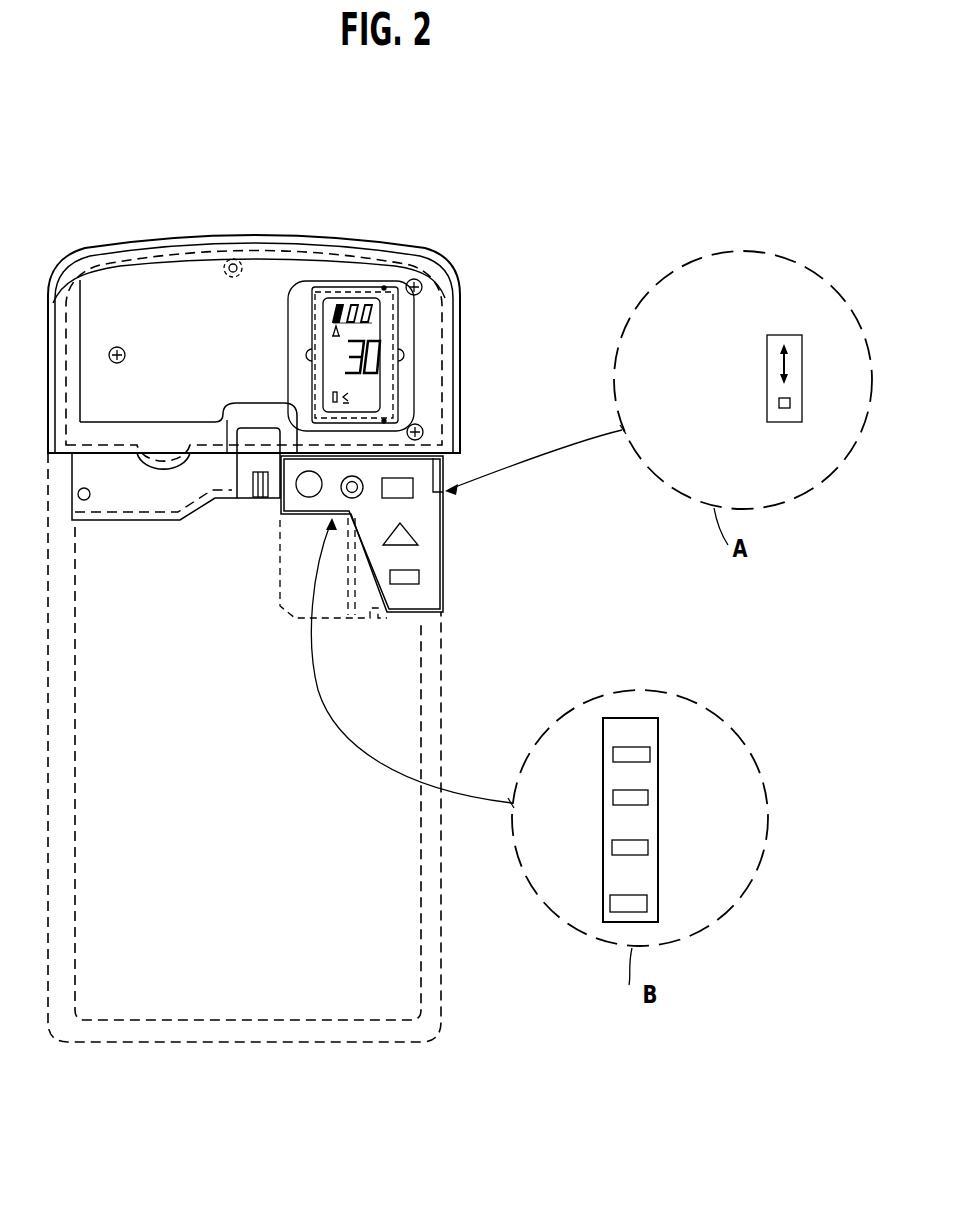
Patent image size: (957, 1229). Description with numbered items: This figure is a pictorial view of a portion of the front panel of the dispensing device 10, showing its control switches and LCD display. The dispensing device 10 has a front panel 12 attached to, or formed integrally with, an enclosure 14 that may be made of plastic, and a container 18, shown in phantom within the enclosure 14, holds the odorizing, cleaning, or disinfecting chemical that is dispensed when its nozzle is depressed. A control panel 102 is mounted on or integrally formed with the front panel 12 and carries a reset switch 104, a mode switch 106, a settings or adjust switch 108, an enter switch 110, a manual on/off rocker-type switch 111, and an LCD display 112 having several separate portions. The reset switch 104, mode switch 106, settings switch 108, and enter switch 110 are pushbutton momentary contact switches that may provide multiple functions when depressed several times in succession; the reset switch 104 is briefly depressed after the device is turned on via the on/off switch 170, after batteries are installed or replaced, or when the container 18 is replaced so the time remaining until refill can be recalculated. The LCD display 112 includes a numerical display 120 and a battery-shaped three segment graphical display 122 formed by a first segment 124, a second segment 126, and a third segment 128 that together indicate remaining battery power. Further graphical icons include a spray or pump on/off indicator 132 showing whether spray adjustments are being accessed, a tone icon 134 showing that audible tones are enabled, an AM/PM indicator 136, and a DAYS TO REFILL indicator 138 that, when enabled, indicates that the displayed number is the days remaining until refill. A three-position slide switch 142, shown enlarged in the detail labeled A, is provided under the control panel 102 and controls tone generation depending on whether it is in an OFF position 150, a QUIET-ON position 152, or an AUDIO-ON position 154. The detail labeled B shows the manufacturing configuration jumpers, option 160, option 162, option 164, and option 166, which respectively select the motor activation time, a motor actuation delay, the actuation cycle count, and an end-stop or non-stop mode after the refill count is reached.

The dispensing device 10 is at (433, 114).
The front panel 12 is at (173, 270).
The enclosure 14 is at (58, 486).
The container 18 is at (88, 738).
The control panel 102 is at (444, 614).
The reset switch 104 is at (290, 501).
The mode switch 106 is at (414, 485).
The settings switch 108 is at (418, 535).
The enter switch 110 is at (420, 580).
The manual on/off rocker-type switch 111 is at (396, 660).
The LCD display 112 is at (423, 280).
The numerical display 120 is at (333, 357).
The three segment LCD graphical display 122 is at (356, 303).
The first segment 124 is at (337, 306).
The second segment 126 is at (368, 306).
The third segment 128 is at (375, 315).
The SPRAY (PUMP) on/off indicator 132 is at (331, 397).
The tone icon 134 is at (334, 331).
The AM/PM indicator 136 is at (376, 331).
The DAYS TO REFILL indicator 138 is at (330, 384).
The three-position slide switch 142 is at (790, 412).
The OFF position 150 is at (714, 408).
The QUIET-ON position 152 is at (660, 386).
The AUDIO-ON position 154 is at (655, 352).
The option 160 jumper 160 is at (650, 757).
The option 162 jumper 162 is at (648, 797).
The option 164 jumper 164 is at (648, 850).
The option 166 jumper 166 is at (647, 905).
The on/off switch 170 is at (92, 272).